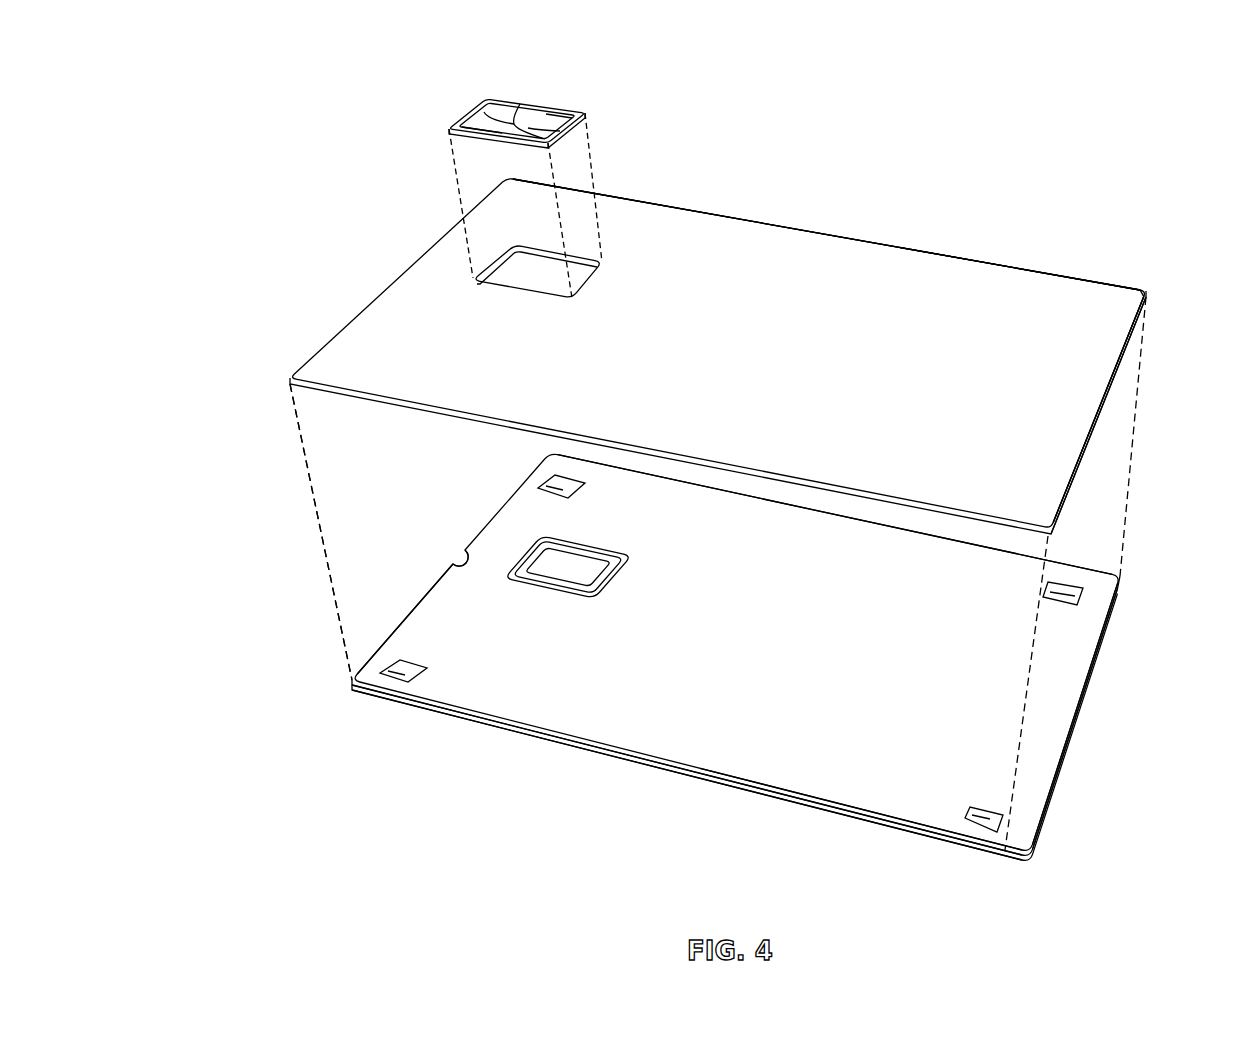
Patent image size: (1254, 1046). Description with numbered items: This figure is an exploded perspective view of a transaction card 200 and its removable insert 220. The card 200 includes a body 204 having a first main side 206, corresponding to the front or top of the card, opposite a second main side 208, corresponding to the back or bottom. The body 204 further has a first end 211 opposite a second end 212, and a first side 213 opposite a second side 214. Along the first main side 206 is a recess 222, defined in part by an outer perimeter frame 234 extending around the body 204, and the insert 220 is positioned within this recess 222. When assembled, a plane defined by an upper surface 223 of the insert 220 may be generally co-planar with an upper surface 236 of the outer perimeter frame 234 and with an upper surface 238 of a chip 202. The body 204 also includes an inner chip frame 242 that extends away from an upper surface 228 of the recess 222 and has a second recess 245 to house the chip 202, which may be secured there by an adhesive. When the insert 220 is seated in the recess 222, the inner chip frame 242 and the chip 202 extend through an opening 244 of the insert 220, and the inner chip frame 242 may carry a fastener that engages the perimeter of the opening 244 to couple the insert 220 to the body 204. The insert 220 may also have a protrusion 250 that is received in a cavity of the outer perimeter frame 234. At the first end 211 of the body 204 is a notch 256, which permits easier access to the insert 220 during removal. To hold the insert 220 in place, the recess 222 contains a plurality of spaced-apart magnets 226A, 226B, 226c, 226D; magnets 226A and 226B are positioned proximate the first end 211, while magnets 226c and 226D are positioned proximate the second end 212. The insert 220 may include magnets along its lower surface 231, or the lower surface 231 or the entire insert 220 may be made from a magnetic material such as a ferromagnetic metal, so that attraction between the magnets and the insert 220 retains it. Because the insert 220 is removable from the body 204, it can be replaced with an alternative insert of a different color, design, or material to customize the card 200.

The transaction card 200 is at (218, 98).
The chip 202 is at (509, 98).
The upper surface of the chip 238 is at (570, 109).
The opening of the insert 244 is at (530, 266).
The body 204 is at (335, 333).
The insert 220 is at (697, 238).
The first main side 206 is at (797, 240).
The second side 214 is at (1010, 246).
The upper surface of the insert 223 is at (1098, 312).
The protrusion of the insert 250 is at (1096, 443).
The lower surface of the insert 231 is at (298, 400).
The recess 222 is at (548, 703).
The first end 211 is at (413, 589).
The notch 256 is at (450, 557).
The first side 213 is at (615, 769).
The upper surface of the recess 228 is at (697, 725).
The second main side 208 is at (777, 807).
The outer perimeter frame 234 is at (888, 826).
The upper surface of the outer perimeter frame 236 is at (1081, 692).
The second end 212 is at (1074, 770).
The magnet 226A is at (412, 674).
The magnet 226B is at (540, 482).
The magnet 226c is at (1078, 598).
The magnet 226D is at (988, 823).
The inner chip frame 242 is at (530, 546).
The second recess 245 is at (580, 559).